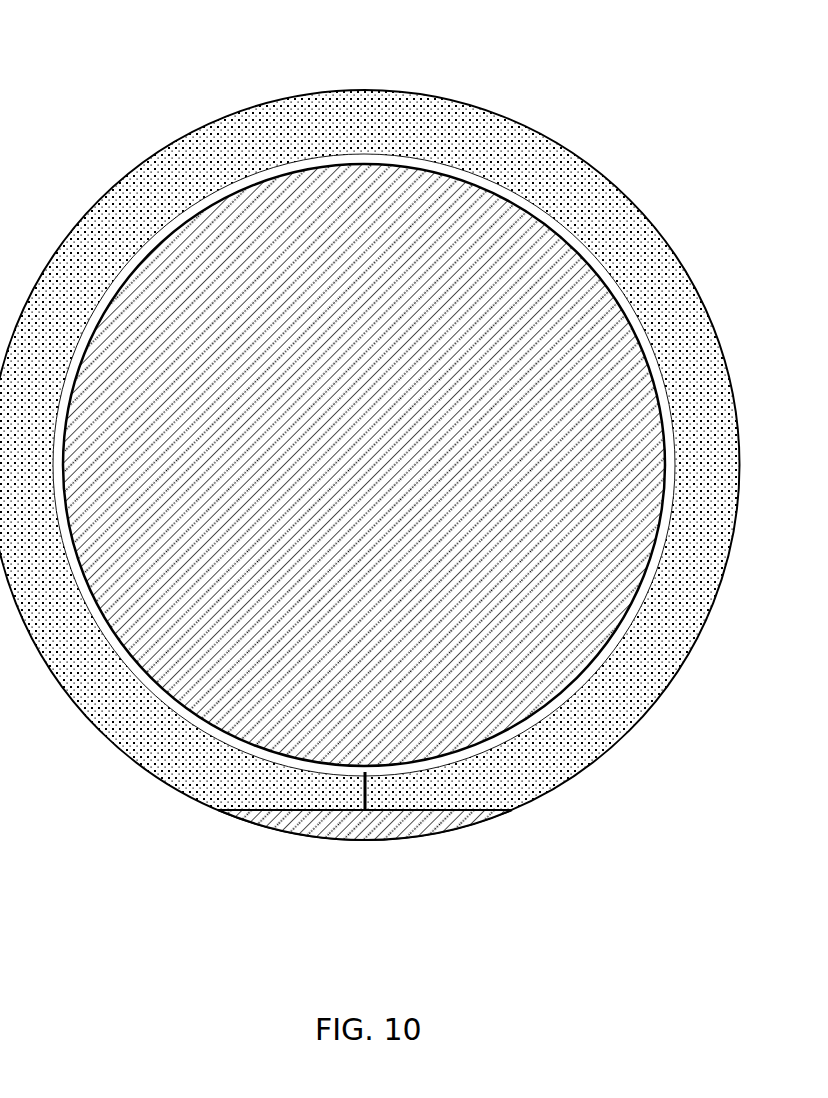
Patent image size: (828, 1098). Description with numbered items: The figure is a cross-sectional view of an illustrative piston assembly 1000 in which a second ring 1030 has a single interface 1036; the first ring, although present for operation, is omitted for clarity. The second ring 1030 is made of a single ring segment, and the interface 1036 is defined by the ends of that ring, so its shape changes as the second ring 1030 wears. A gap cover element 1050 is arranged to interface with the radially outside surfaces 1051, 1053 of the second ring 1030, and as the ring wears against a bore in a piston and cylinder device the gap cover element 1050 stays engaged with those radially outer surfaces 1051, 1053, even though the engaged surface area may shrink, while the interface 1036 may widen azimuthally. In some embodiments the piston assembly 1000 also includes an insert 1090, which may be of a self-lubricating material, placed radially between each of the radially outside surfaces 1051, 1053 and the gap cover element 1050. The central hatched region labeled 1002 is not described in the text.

The piston assembly 1000 is at (168, 47).
The central region of substrate 1002 is at (481, 419).
The second ring 1030 is at (374, 132).
The single interface 1036 is at (368, 786).
The gap cover element 1050 is at (275, 830).
The radially outside surface 1051 is at (238, 808).
The radially outside surface 1053 is at (494, 806).
The insert 1090 is at (306, 808).